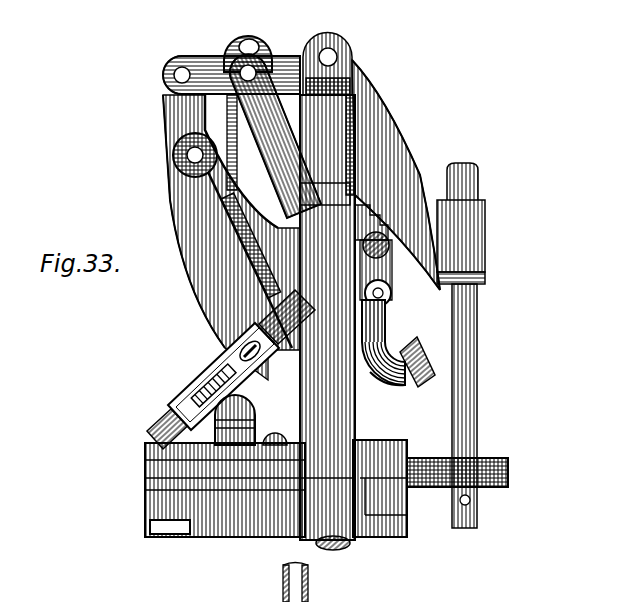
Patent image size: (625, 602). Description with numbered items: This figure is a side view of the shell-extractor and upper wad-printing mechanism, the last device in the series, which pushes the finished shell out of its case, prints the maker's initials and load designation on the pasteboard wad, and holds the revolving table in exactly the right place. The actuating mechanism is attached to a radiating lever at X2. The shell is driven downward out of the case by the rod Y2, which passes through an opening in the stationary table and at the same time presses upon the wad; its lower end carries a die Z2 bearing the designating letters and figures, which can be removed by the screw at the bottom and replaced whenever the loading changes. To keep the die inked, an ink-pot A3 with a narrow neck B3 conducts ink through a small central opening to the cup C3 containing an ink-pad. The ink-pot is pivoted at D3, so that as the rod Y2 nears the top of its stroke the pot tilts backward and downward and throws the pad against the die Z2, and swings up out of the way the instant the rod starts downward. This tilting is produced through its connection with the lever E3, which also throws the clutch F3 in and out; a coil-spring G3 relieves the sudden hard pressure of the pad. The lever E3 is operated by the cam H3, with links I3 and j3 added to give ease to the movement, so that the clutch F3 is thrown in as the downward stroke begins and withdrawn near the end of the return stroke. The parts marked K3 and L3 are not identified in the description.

The link j3 is at (231, 64).
The cam H3 is at (253, 44).
The radiating lever attachment X2 is at (335, 57).
The link I3 is at (275, 136).
The lever E3 is at (231, 237).
The lever bar K3 is at (251, 254).
The pivot D3 is at (391, 295).
The ink-pot A3 is at (372, 346).
The cup C3 is at (421, 352).
The narrow neck B3 is at (394, 386).
The rod Y2 is at (468, 325).
The coil-spring G3 is at (231, 369).
The cylinder boss L3 is at (258, 430).
The clutch F3 is at (437, 458).
The die Z2 is at (478, 509).